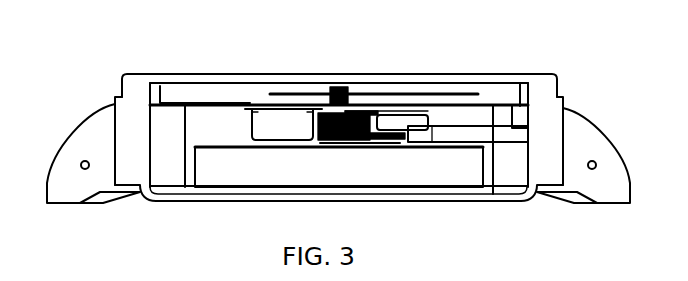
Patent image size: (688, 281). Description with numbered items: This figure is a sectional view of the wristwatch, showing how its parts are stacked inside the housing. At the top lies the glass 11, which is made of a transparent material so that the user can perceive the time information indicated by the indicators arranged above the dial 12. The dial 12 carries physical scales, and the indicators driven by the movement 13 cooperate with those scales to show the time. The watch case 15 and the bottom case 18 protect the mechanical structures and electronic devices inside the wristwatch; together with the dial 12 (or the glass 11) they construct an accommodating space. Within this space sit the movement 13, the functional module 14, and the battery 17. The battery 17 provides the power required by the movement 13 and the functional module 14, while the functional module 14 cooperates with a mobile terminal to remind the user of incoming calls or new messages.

The glass 11 is at (222, 81).
The dial 12 is at (249, 100).
The movement 13 is at (288, 128).
The functional module 14 is at (482, 140).
The watch case 15 is at (128, 116).
The battery 17 is at (272, 183).
The bottom case 18 is at (382, 198).